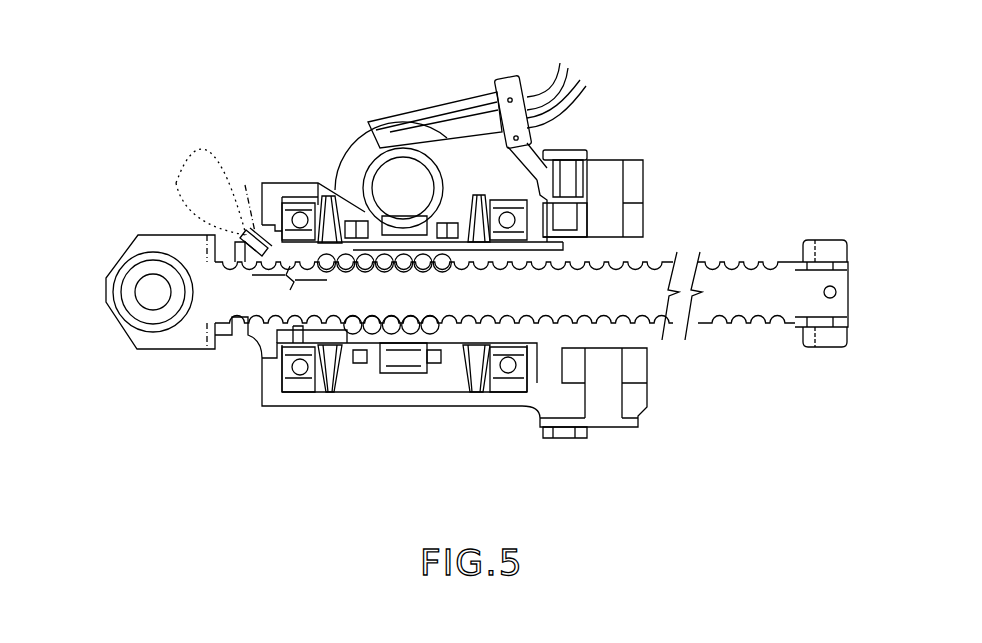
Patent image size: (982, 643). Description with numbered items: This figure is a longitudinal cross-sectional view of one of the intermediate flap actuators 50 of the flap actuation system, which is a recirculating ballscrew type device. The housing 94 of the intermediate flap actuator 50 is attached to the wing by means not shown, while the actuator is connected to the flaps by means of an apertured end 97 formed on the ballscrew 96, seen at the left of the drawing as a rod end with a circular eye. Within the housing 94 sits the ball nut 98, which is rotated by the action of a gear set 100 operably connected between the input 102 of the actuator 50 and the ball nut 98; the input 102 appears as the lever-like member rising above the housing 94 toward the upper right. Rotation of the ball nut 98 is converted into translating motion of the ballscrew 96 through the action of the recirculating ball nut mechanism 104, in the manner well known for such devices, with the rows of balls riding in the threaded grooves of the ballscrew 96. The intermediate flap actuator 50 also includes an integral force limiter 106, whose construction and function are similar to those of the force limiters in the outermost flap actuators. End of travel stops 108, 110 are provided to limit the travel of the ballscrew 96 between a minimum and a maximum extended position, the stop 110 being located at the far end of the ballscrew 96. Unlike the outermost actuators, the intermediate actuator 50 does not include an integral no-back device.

The intermediate flap actuator 50 is at (285, 464).
The housing 94 is at (545, 138).
The ballscrew 96 is at (230, 345).
The apertured end 97 is at (136, 248).
The ball nut 98 is at (457, 347).
The gear set 100 is at (317, 181).
The input 102 is at (393, 105).
The recirculating ball nut mechanism 104 is at (347, 347).
The integral force limiter 106 is at (400, 381).
The end of travel stop 108 is at (243, 358).
The end of travel stop 110 is at (803, 341).